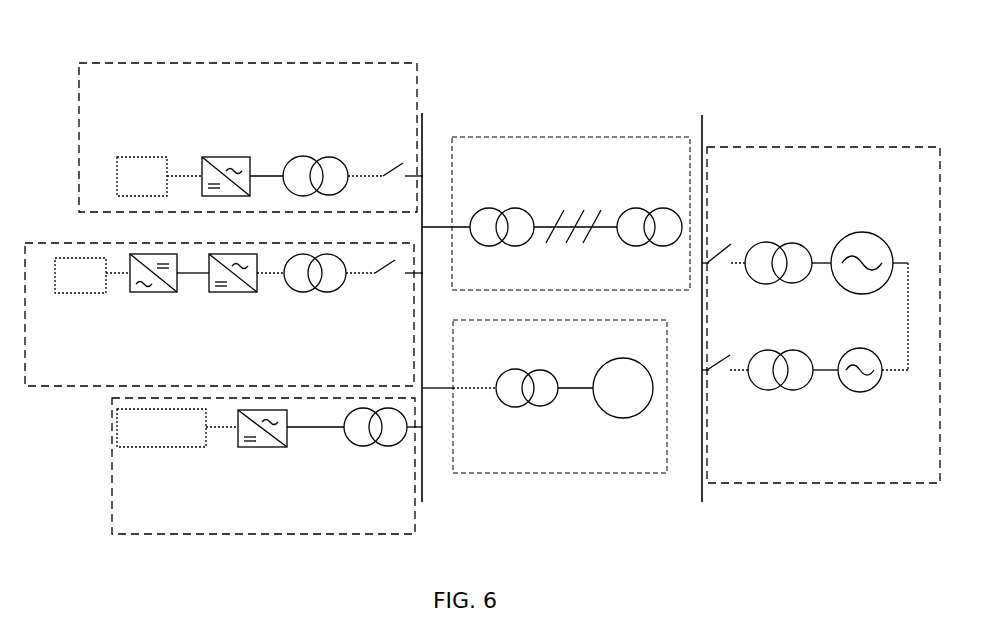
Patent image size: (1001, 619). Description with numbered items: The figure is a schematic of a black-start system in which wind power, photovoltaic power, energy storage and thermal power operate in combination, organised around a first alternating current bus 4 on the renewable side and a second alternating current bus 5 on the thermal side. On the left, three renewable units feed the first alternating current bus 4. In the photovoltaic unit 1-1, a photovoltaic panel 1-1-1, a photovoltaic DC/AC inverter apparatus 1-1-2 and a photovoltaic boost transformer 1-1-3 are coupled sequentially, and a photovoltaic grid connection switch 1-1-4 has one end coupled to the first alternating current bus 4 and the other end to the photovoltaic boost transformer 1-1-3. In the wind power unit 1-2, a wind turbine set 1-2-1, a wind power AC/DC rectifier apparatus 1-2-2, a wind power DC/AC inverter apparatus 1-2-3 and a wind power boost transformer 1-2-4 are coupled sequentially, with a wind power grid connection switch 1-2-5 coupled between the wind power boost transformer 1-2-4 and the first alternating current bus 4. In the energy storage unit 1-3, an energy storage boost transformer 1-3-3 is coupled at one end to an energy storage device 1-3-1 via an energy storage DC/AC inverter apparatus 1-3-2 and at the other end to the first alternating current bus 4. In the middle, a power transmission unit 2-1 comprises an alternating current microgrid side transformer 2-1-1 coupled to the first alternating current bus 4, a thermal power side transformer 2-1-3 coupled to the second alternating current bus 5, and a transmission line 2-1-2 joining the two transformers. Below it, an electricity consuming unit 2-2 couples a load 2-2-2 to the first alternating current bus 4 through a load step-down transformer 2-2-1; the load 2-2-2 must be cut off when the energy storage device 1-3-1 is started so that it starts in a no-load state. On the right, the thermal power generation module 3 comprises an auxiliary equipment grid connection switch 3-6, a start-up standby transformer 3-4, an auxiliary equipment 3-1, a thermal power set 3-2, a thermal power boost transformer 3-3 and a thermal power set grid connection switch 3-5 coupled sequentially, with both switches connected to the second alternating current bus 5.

The photovoltaic unit 1-1 is at (248, 137).
The photovoltaic panel 1-1-1 is at (140, 157).
The photovoltaic DC/AC inverter apparatus 1-1-2 is at (224, 158).
The photovoltaic boost transformer 1-1-3 is at (315, 158).
The photovoltaic grid connection switch 1-1-4 is at (395, 158).
The wind power unit 1-2 is at (219, 314).
The wind turbine set 1-2-1 is at (78, 294).
The wind power AC/DC rectifier apparatus 1-2-2 is at (167, 292).
The wind power DC/AC inverter apparatus 1-2-3 is at (240, 292).
The wind power boost transformer 1-2-4 is at (303, 292).
The wind power grid connection switch 1-2-5 is at (384, 280).
The energy storage unit 1-3 is at (263, 466).
The energy storage device 1-3-1 is at (163, 448).
The energy storage DC/AC inverter apparatus 1-3-2 is at (250, 449).
The energy storage boost transformer 1-3-3 is at (361, 446).
The power transmission unit 2-1 is at (571, 213).
The alternating current microgrid side transformer 2-1-1 is at (488, 207).
The transmission line 2-1-2 is at (575, 207).
The thermal power side transformer 2-1-3 is at (645, 207).
The electricity consuming unit 2-2 is at (560, 396).
The load step-down transformer 2-2-1 is at (523, 365).
The load 2-2-2 is at (615, 360).
The thermal power generation module 3 is at (823, 315).
The auxiliary equipment 3-1 is at (865, 347).
The thermal power set 3-2 is at (865, 232).
The thermal power boost transformer 3-3 is at (778, 241).
The start-up standby transformer 3-4 is at (780, 348).
The thermal power set grid connection switch 3-5 is at (721, 248).
The auxiliary equipment grid connection switch 3-6 is at (718, 356).
The first alternating current bus 4 is at (526, 323).
The second alternating current bus 5 is at (808, 324).